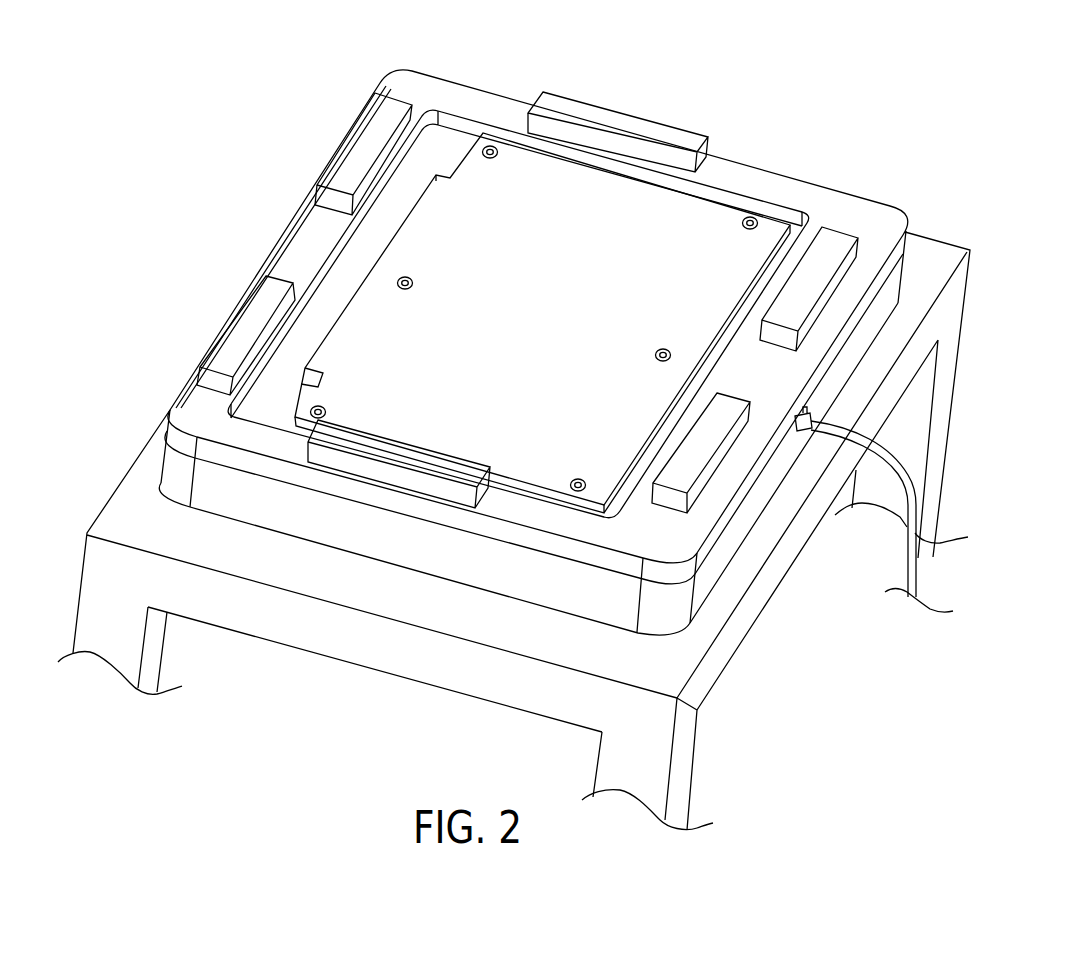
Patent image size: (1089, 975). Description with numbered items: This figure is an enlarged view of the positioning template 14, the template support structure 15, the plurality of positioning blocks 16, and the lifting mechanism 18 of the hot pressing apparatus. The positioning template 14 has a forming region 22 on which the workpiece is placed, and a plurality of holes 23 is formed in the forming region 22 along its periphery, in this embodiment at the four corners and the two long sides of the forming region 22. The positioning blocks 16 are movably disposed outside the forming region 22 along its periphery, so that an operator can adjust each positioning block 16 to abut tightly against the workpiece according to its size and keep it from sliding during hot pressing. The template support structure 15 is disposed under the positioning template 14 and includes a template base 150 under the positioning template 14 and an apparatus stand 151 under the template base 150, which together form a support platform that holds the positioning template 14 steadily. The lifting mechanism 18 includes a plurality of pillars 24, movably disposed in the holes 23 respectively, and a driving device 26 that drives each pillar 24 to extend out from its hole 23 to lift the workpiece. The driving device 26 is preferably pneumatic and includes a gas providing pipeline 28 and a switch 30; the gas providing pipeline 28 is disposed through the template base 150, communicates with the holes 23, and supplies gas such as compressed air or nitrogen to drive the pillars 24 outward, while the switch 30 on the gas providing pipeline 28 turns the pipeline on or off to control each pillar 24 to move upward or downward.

The positioning template 14 is at (862, 203).
The template support structure 15 is at (569, 470).
The template base 150 is at (890, 291).
The apparatus stand 151 is at (948, 309).
The positioning blocks 16 is at (651, 104).
The lifting mechanism 18 is at (624, 490).
The forming region 22 is at (748, 186).
The holes 23 is at (590, 487).
The pillars 24 is at (612, 470).
The driving device 26 is at (871, 561).
The gas providing pipeline 28 is at (908, 543).
The switch 30 is at (797, 431).